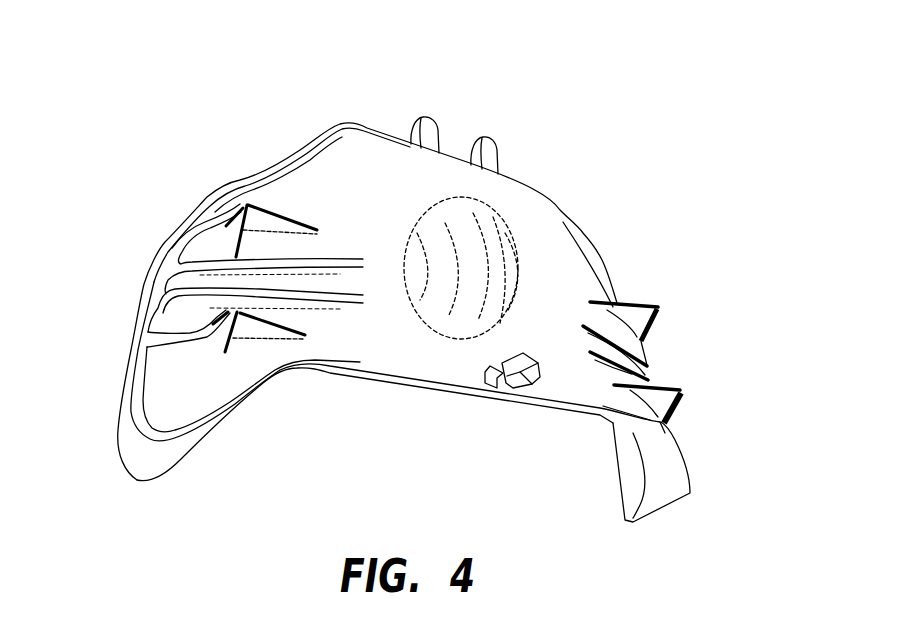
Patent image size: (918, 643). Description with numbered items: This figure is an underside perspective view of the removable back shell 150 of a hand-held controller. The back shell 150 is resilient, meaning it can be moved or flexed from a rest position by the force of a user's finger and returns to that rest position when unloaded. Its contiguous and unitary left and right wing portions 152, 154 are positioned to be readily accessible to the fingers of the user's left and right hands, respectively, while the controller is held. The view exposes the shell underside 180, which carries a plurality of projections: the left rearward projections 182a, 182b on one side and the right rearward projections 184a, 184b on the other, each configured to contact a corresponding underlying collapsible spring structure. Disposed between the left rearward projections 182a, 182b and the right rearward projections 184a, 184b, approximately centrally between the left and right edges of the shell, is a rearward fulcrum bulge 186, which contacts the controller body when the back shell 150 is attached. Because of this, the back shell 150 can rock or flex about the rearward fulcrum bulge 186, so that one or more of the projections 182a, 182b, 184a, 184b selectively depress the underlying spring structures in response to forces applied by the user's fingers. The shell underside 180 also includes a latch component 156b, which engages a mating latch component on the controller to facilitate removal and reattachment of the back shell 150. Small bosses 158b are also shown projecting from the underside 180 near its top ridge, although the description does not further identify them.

The back shell 150 is at (158, 60).
The left wing portion 152 is at (163, 410).
The right wing portion 154 is at (672, 480).
The latch component 156b is at (528, 380).
The bosses 158b is at (424, 118).
The shell underside 180 is at (555, 230).
The left rearward projection 182a is at (243, 198).
The left rearward projection 182b is at (213, 290).
The right rearward projection 184a is at (658, 304).
The right rearward projection 184b is at (678, 389).
The rearward fulcrum bulge 186 is at (493, 273).